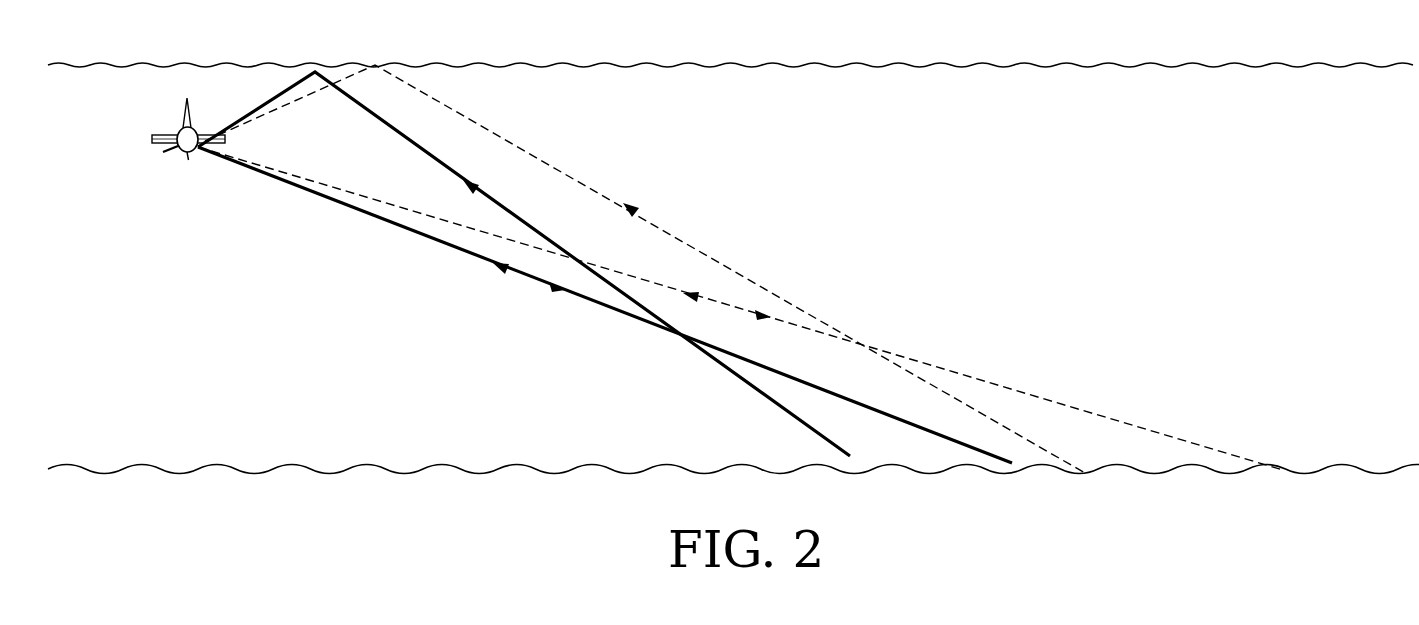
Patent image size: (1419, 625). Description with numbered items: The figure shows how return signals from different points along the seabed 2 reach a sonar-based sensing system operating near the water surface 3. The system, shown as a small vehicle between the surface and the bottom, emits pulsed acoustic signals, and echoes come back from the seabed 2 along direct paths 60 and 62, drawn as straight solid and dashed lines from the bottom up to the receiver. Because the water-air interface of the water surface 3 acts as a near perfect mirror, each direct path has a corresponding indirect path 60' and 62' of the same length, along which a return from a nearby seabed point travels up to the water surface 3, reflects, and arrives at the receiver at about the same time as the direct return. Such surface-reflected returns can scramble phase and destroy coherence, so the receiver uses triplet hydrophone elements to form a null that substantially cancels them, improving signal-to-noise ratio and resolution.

The seabed 2 is at (277, 462).
The water surface 3 is at (1107, 63).
The direct path 60 is at (605, 305).
The indirect path 60' is at (524, 264).
The direct path 62 is at (740, 308).
The indirect path 62' is at (645, 269).